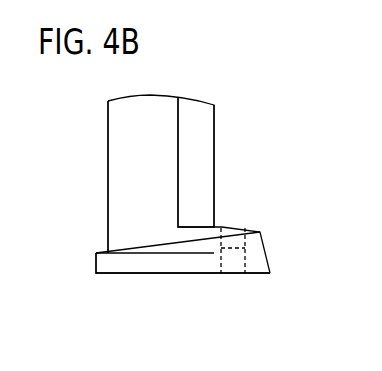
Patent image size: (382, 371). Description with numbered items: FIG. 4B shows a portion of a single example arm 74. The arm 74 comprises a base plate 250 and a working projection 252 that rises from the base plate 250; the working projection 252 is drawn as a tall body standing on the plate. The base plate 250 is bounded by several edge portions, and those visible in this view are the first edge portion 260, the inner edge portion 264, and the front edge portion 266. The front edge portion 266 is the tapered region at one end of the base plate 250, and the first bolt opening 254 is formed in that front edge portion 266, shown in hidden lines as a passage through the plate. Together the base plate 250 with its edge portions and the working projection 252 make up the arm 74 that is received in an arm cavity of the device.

The probe 74 is at (122, 133).
The housing body 252 is at (120, 160).
The internal channel 254 is at (237, 237).
The tapered wall 266 is at (262, 240).
The upper surface 264 is at (92, 258).
The base portion 250 is at (95, 274).
The flange 260 is at (168, 268).